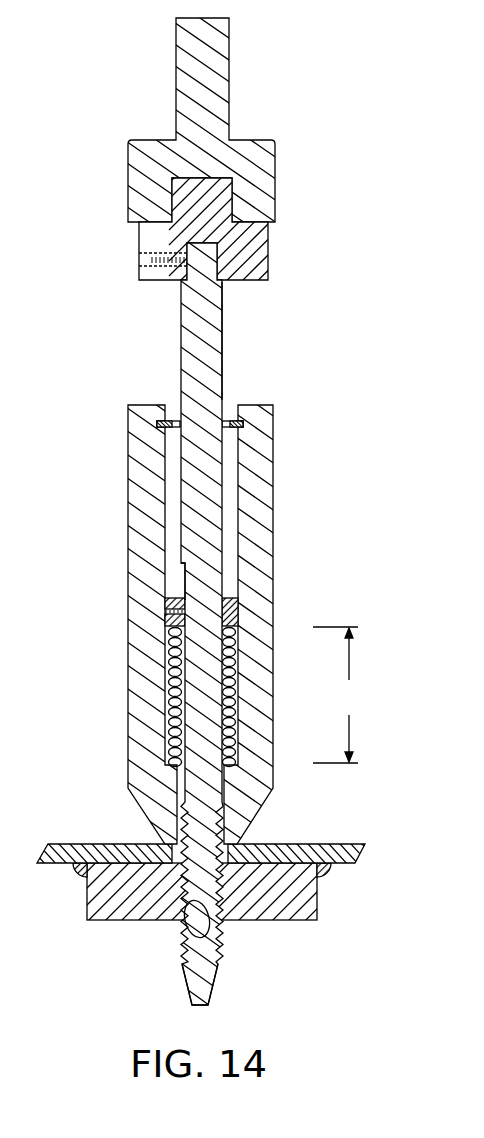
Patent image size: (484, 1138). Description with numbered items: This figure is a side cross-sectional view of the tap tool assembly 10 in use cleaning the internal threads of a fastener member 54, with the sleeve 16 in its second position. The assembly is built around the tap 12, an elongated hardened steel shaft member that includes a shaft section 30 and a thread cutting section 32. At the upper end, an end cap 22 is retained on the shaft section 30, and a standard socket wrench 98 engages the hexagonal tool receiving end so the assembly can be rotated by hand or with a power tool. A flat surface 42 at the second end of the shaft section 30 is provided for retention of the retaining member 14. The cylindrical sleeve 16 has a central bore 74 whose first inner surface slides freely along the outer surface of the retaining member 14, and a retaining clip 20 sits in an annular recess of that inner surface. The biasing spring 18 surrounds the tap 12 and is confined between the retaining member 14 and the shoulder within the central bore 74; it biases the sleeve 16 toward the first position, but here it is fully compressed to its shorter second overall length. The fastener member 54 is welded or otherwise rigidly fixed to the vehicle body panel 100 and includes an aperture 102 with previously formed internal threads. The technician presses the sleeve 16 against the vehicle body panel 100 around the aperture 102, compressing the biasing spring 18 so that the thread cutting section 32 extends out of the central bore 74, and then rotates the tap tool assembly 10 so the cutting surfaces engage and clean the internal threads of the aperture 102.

The tap tool assembly 10 is at (74, 186).
The socket wrench 98 is at (253, 165).
The end cap 22 is at (243, 253).
The shaft section 30 is at (223, 310).
The tap 12 is at (200, 358).
The central bore 74 is at (172, 420).
The retaining clip 20 is at (228, 420).
The sleeve 16 is at (146, 522).
The flat surface 42 is at (185, 582).
The retaining member 14 is at (233, 612).
The biasing spring 18 is at (175, 690).
The vehicle body panel 100 is at (125, 850).
The aperture 102 is at (191, 936).
The fastener member 54 is at (273, 893).
The thread cutting section 32 is at (203, 970).